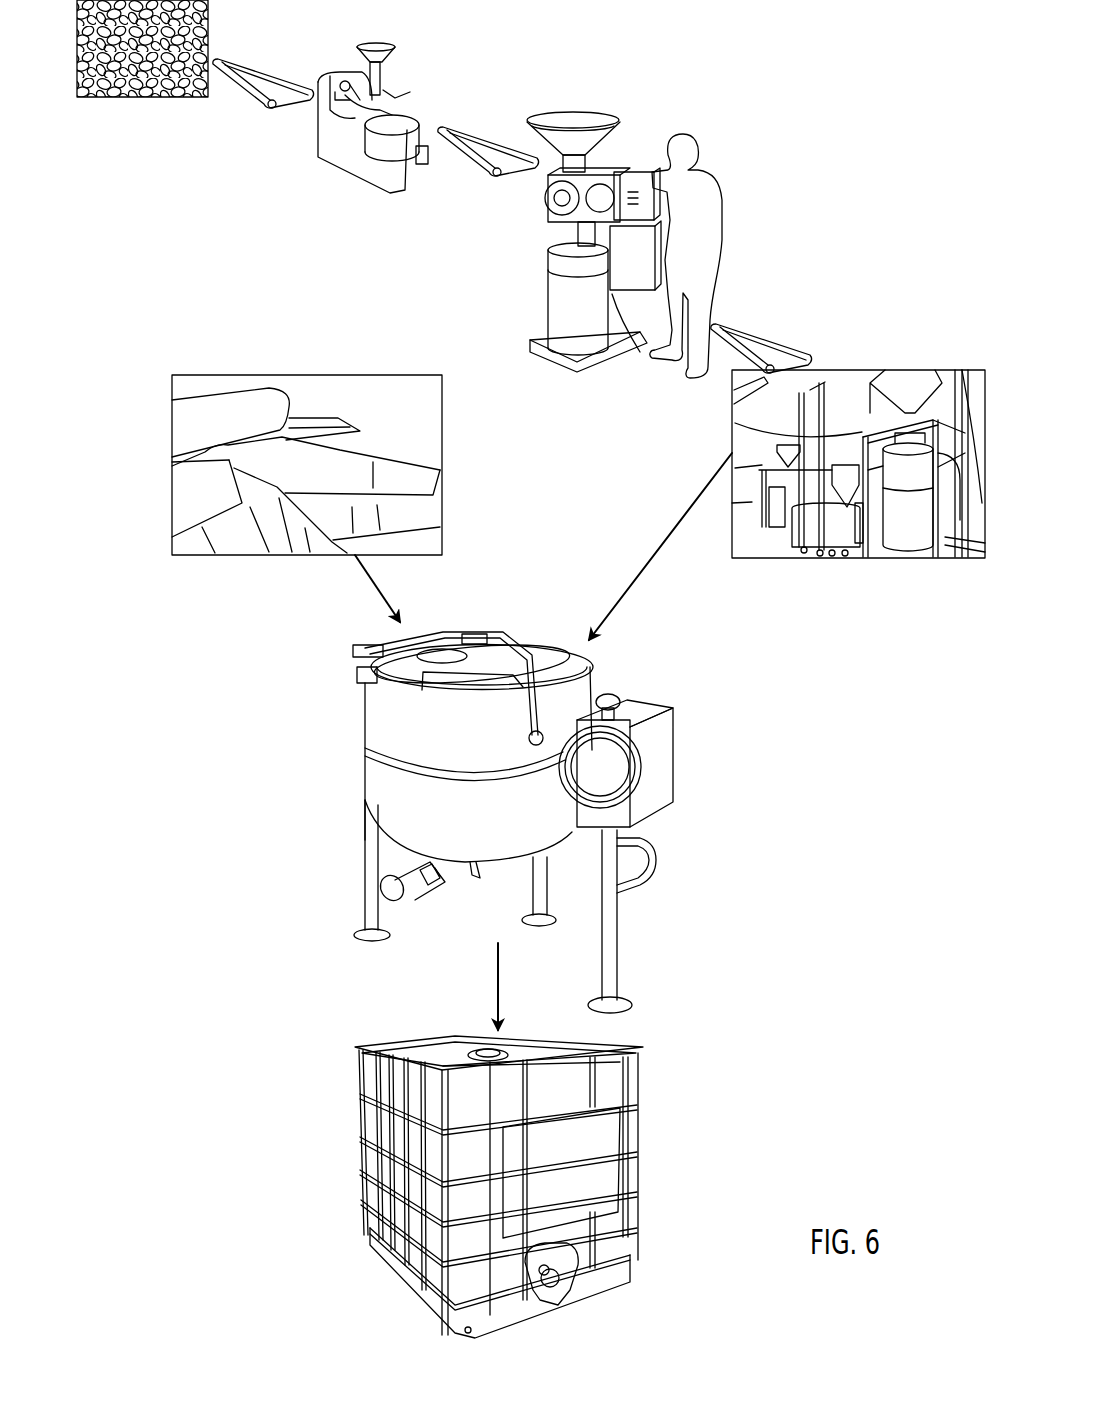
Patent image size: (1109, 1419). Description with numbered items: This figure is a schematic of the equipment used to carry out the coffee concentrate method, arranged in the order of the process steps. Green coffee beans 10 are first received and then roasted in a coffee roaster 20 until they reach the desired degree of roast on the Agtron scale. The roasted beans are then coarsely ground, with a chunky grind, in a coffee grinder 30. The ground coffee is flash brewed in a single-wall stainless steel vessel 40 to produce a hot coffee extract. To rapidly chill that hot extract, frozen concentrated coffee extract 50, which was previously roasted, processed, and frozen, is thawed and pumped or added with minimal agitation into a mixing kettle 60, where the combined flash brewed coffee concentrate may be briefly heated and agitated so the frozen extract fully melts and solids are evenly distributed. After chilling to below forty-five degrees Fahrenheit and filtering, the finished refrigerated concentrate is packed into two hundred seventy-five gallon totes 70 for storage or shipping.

The green coffee beans 10 is at (133, 112).
The coffee roaster 20 is at (347, 196).
The coffee grinder 30 is at (638, 103).
The single-wall stainless steel vessel 40 is at (840, 570).
The frozen concentrated coffee extract 50 is at (448, 472).
The mixing kettle 60 is at (712, 822).
The totes 70 is at (647, 1170).